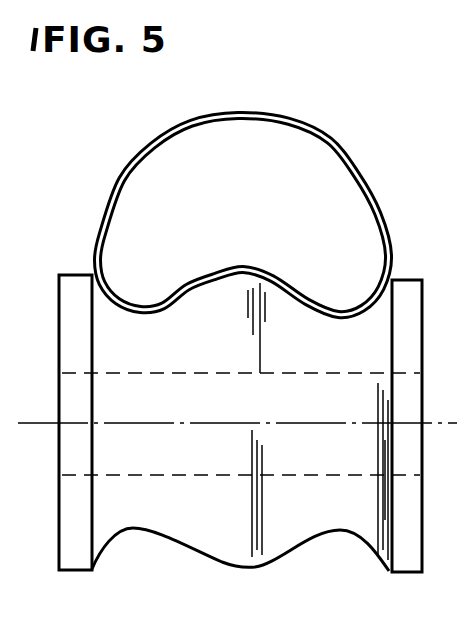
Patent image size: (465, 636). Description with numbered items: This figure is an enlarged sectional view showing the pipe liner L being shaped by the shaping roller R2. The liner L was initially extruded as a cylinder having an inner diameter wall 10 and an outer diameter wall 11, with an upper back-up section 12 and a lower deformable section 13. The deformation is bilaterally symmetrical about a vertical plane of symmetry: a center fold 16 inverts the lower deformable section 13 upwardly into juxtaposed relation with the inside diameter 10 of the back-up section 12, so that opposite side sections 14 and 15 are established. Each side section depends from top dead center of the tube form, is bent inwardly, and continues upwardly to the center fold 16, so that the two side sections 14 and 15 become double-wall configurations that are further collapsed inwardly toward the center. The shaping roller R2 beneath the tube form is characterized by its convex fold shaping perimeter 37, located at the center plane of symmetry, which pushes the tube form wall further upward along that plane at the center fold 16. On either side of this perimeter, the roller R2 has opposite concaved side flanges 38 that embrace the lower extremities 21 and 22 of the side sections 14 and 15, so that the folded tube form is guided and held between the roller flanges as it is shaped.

The inner diameter wall 10 is at (251, 214).
The outer diameter wall 11 is at (251, 214).
The upper back-up section 12 is at (214, 104).
The lower deformable section 13 is at (277, 300).
The side section 14 is at (118, 182).
The side section 15 is at (365, 188).
The center fold 16 is at (233, 281).
The lower extremity of side section 21 is at (128, 313).
The lower extremity of side section 22 is at (343, 317).
The convex fold shaping perimeter 37 is at (263, 283).
The concaved side flanges 38 is at (107, 295).
The pipe liner L is at (305, 116).
The shaping roller R2 is at (78, 264).